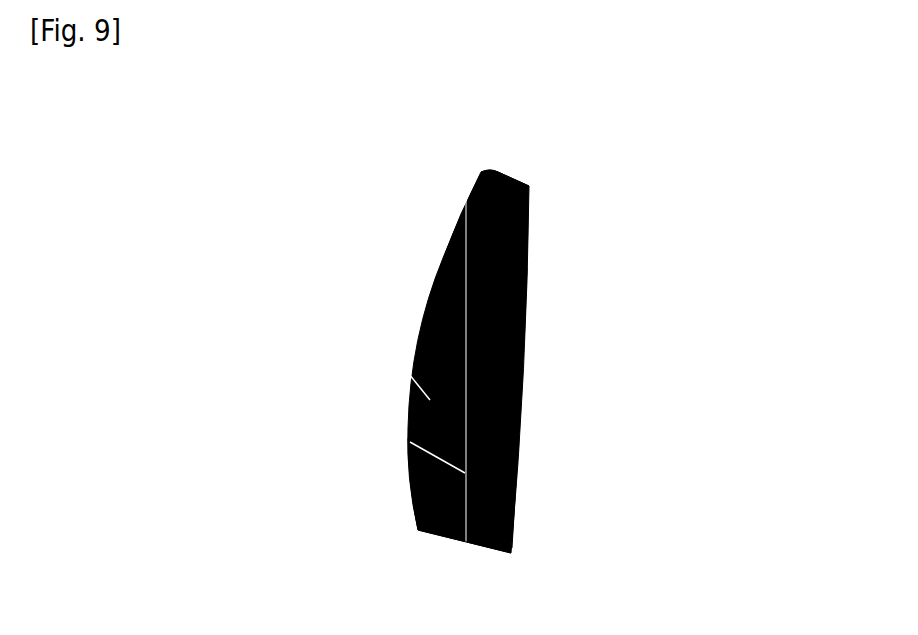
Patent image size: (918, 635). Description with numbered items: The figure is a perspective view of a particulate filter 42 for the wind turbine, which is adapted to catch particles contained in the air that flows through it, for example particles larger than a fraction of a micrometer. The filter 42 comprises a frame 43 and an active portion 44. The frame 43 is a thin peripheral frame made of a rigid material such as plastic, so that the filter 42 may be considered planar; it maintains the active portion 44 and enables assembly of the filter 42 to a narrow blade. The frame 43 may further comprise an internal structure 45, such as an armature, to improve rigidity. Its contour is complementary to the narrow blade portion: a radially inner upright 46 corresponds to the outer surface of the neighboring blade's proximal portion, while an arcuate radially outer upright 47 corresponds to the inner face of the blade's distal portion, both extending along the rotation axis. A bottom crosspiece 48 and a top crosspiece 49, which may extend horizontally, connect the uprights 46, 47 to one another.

The filter 42 is at (615, 252).
The frame 43 is at (510, 405).
The active portion 44 is at (380, 340).
The internal structure 45 is at (402, 434).
The radially inner upright 46 is at (506, 503).
The radially outer upright 47 is at (404, 485).
The bottom crosspiece 48 is at (482, 542).
The top crosspiece 49 is at (494, 167).